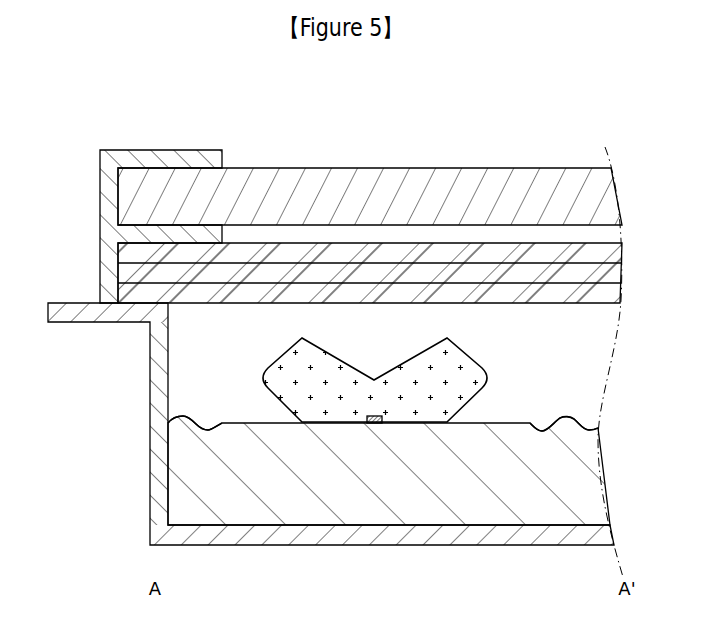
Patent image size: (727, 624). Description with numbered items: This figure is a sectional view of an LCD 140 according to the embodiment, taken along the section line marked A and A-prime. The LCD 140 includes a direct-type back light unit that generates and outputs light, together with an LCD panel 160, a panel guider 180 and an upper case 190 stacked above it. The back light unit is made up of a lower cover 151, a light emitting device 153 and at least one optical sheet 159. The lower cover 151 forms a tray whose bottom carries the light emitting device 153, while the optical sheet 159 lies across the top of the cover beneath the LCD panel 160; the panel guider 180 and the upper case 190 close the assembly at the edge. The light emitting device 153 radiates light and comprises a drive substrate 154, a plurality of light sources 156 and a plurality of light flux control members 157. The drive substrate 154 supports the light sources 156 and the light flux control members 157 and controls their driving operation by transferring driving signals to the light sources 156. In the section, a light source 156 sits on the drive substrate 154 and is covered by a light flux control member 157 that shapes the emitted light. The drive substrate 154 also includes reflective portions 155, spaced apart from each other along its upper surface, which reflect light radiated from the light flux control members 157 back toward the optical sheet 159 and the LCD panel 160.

The LCD 140 is at (597, 103).
The lower cover 151 is at (155, 481).
The light emitting device 153 is at (352, 478).
The drive substrate 154 is at (328, 510).
The reflective portions 155 is at (183, 415).
The light source 156 is at (375, 424).
The light flux control member 157 is at (420, 408).
The optical sheet 159 is at (505, 256).
The LCD panel 160 is at (328, 194).
The panel guider 180 is at (112, 264).
The upper case 190 is at (112, 186).